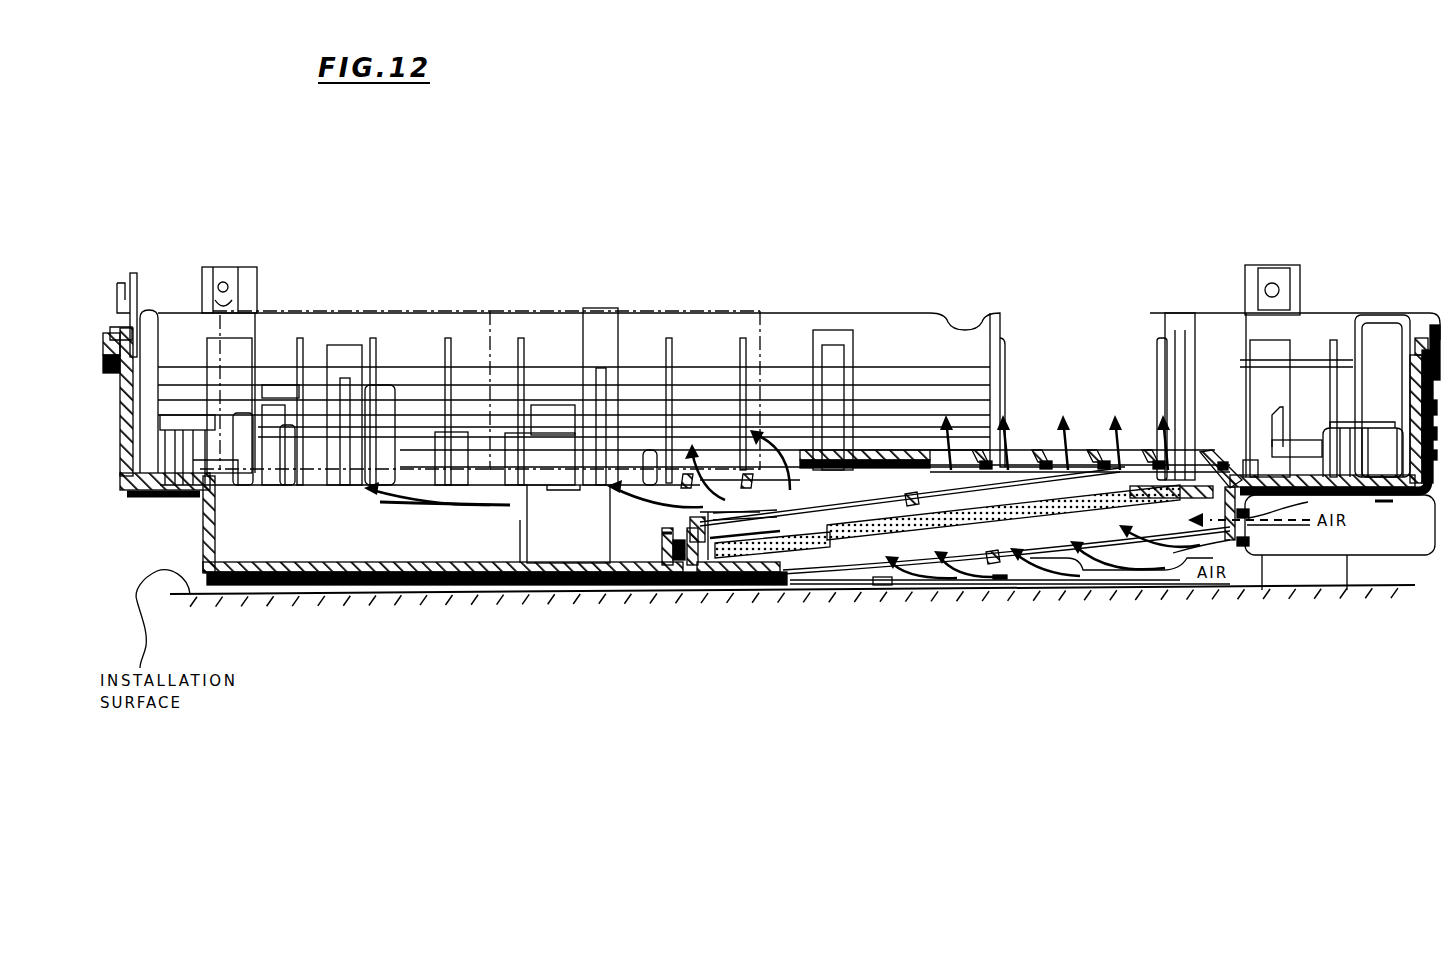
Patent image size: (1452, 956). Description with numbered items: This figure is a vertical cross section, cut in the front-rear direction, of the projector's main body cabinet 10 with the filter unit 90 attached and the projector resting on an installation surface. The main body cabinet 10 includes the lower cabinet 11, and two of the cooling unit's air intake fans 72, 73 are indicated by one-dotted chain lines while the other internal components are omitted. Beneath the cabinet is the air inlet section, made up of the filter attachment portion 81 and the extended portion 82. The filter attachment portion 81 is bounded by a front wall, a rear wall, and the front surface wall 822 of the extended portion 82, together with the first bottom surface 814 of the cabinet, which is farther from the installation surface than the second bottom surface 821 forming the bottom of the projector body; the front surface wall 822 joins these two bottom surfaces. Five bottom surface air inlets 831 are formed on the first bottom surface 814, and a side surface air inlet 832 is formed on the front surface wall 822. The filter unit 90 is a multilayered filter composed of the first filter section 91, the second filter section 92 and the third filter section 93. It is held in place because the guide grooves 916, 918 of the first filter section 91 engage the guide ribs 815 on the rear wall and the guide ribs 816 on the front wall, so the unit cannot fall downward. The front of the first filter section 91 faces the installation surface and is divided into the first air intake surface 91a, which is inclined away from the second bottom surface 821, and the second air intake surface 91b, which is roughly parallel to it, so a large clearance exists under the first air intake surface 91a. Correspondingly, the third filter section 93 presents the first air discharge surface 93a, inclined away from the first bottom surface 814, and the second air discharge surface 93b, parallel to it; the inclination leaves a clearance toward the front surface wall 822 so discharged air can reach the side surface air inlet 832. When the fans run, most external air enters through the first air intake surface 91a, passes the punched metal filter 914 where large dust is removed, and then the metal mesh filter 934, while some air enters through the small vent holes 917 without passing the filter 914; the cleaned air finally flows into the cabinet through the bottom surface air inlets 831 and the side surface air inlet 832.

The main body cabinet 10 is at (178, 292).
The lower cabinet 11 is at (293, 302).
The air intake fan 72 is at (562, 310).
The air intake fan 73 is at (400, 308).
The filter attachment portion 81 is at (912, 445).
The extended portion 82 is at (323, 588).
The filter unit 90 is at (1143, 575).
The first filter section 91 is at (758, 588).
The first air intake surface 91a is at (1013, 567).
The second air intake surface 91b is at (873, 588).
The second filter section 92 is at (915, 537).
The third filter section 93 is at (1143, 483).
The first air discharge surface 93a is at (817, 500).
The second air discharge surface 93b is at (1053, 482).
The first bottom surface 814 is at (721, 498).
The guide ribs 815 is at (695, 588).
The guide ribs 816 is at (1193, 483).
The second bottom surface 821 is at (405, 588).
The front surface wall 822 is at (690, 537).
The bottom surface air inlets 831 is at (980, 440).
The side surface air inlet 832 is at (665, 507).
The filter 914 is at (813, 588).
The guide groove 916 is at (1283, 473).
The vent holes 917 is at (1323, 483).
The guide groove 918 is at (675, 553).
The filter 934 is at (862, 500).